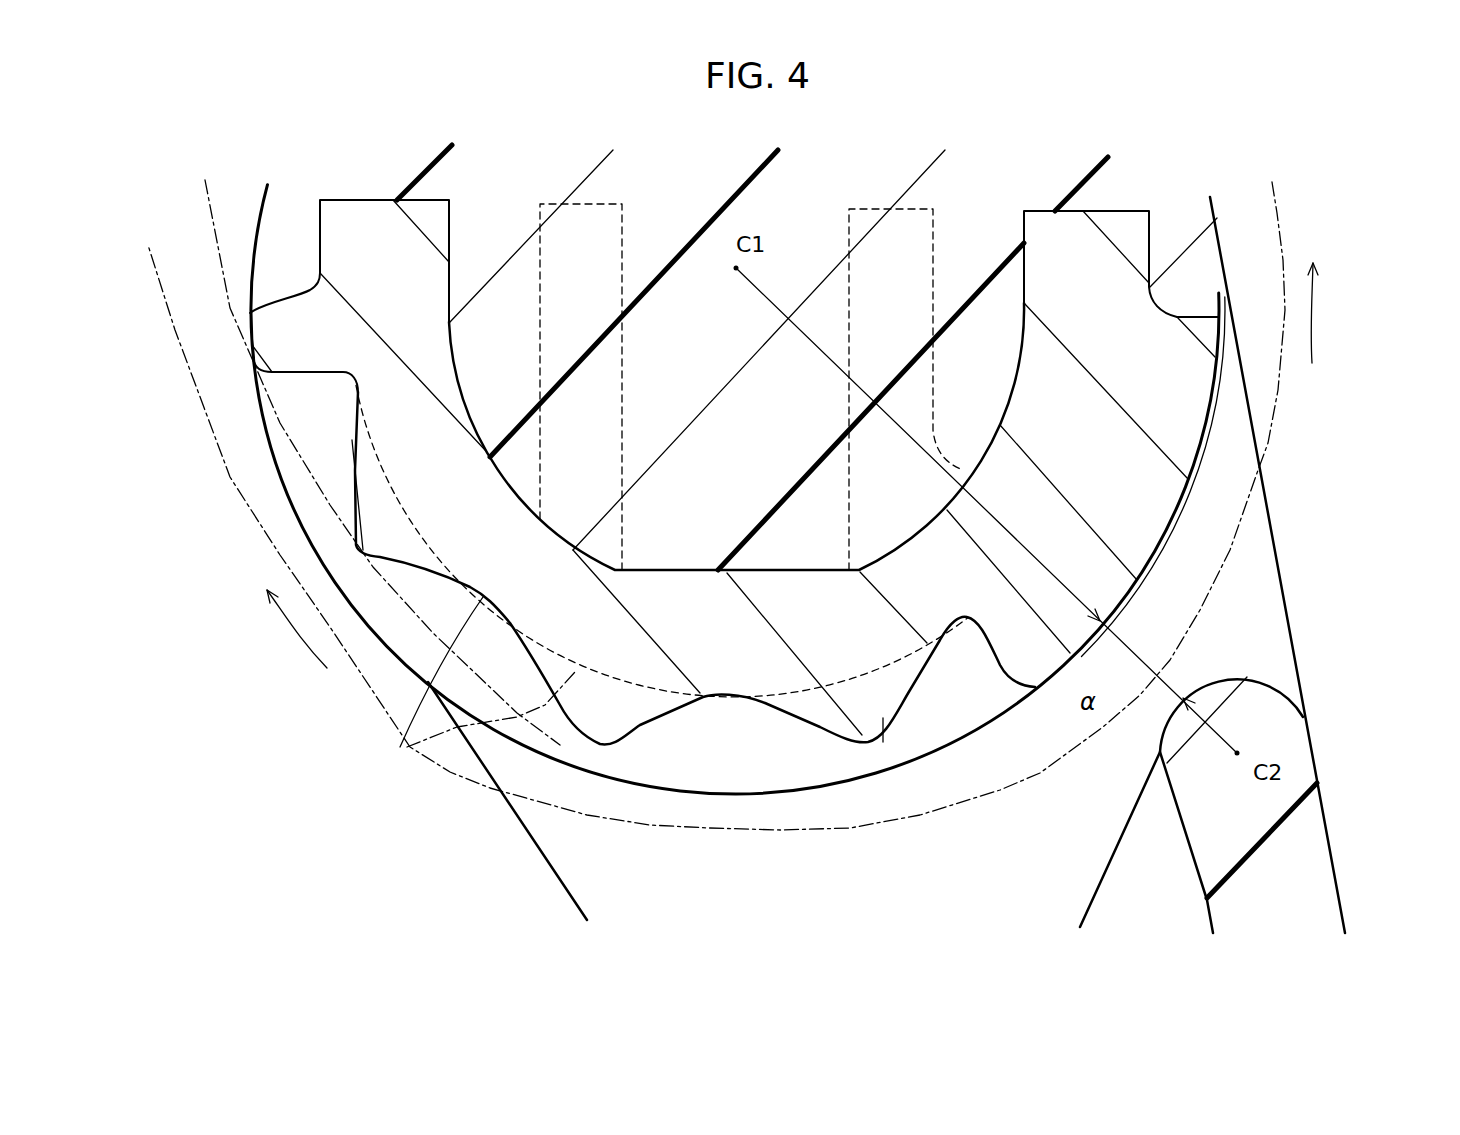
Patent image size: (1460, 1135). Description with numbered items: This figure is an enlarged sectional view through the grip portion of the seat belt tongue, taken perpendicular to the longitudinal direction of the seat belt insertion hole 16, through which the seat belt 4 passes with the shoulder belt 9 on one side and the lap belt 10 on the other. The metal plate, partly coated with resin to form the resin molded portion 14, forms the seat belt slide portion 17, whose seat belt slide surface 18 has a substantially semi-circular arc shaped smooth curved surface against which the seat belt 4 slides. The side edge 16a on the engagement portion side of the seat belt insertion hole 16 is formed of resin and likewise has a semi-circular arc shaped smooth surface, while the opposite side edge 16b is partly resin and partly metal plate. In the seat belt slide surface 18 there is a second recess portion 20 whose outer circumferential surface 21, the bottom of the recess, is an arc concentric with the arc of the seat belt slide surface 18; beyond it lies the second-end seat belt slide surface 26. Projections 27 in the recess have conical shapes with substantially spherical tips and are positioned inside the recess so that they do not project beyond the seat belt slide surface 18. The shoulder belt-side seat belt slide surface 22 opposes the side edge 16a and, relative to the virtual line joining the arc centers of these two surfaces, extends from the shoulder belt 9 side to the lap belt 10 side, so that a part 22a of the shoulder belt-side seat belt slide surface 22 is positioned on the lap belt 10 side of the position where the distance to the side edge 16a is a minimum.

The seat belt 4 is at (1277, 398).
The shoulder belt 9 is at (1275, 198).
The lap belt 10 is at (160, 315).
The resin molded portion 14 is at (758, 451).
The seat belt insertion hole 16 is at (1170, 670).
The side edge 16a is at (1250, 678).
The side edge 16b is at (1127, 593).
The seat belt slide portion 17 is at (684, 607).
The seat belt slide surface 18 is at (738, 800).
The second recess portion 20 is at (997, 650).
The outer circumferential surface 21 is at (406, 748).
The shoulder belt-side seat belt slide surface 22 is at (1200, 443).
The part of the shoulder belt-side seat belt slide surface 22a is at (1063, 657).
The second-end seat belt slide surface 26 is at (820, 805).
The projection 27 is at (355, 527).